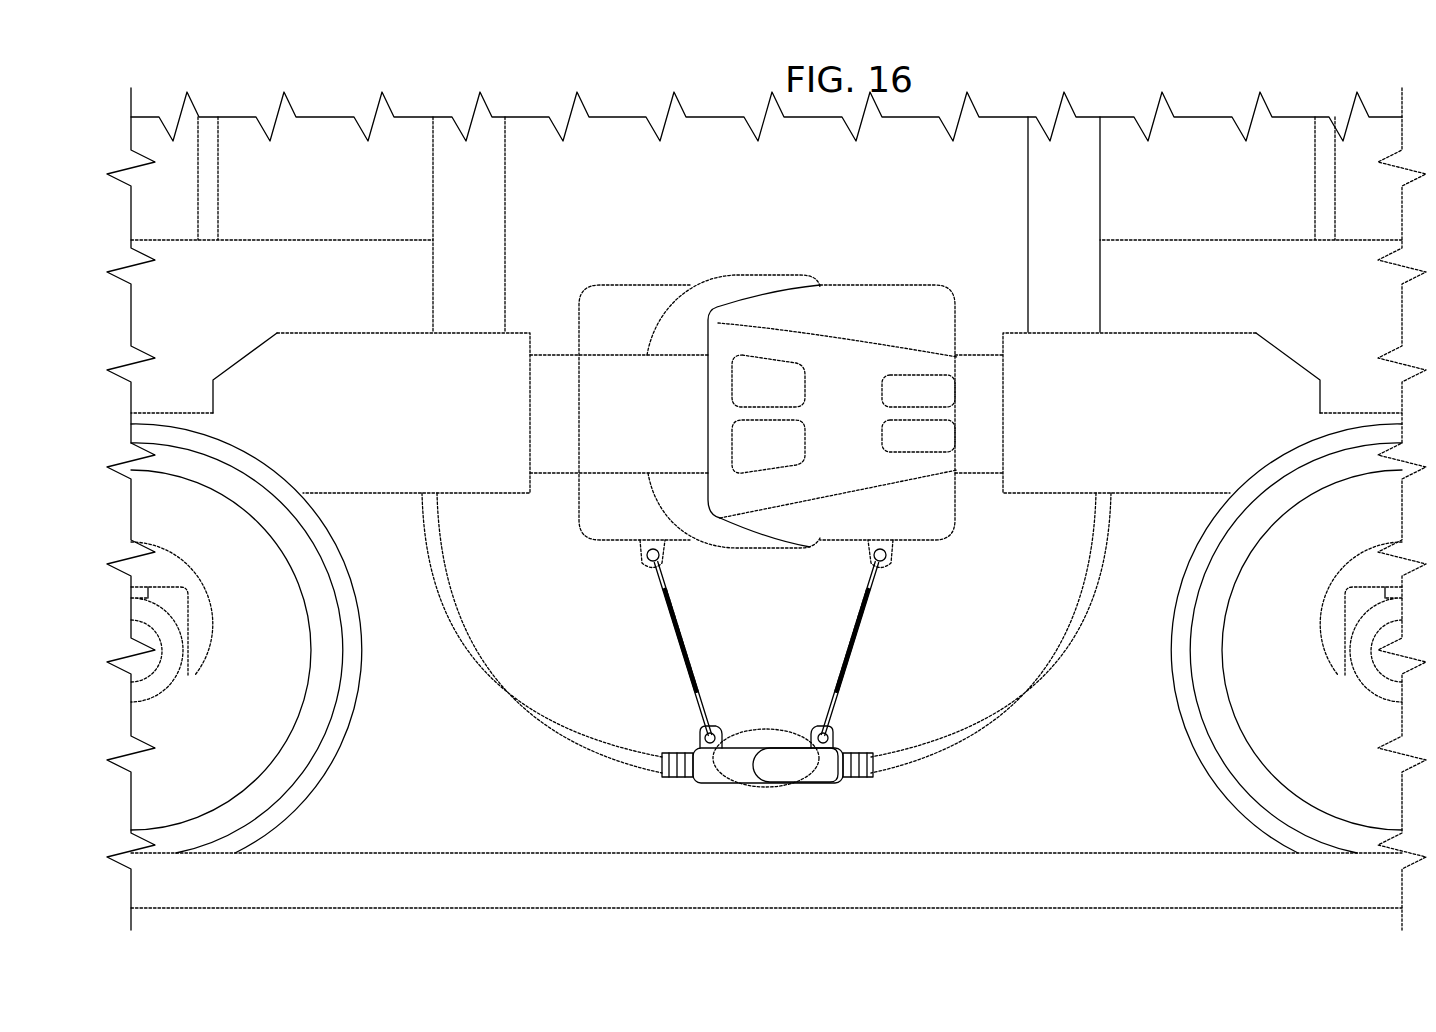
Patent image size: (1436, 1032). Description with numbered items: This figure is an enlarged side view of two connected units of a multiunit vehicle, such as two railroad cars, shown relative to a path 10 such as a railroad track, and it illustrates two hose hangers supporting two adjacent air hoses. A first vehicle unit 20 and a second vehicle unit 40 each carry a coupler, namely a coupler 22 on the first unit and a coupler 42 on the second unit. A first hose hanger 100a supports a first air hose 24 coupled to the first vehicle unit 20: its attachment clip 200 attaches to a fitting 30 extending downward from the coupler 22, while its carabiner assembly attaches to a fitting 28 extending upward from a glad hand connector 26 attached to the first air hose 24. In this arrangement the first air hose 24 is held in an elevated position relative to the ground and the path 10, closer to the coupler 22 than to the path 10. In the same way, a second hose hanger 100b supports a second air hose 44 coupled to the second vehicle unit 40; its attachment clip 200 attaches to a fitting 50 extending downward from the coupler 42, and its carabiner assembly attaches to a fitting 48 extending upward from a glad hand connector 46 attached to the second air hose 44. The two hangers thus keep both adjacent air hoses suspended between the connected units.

The path 10 is at (541, 882).
The first vehicle unit 20 is at (505, 188).
The second vehicle unit 40 is at (1027, 185).
The coupler 22 is at (388, 495).
The coupler 42 is at (1145, 495).
The first air hose 24 is at (514, 721).
The second air hose 44 is at (1019, 721).
The glad hand connector 26 is at (715, 785).
The glad hand connector 46 is at (823, 785).
The fitting 28 is at (700, 738).
The fitting 48 is at (833, 738).
The fitting 30 is at (640, 552).
The fitting 50 is at (893, 552).
The first hose hanger 100a is at (860, 648).
The second hose hanger 100b is at (678, 648).
The attachment clip 200 is at (670, 580).